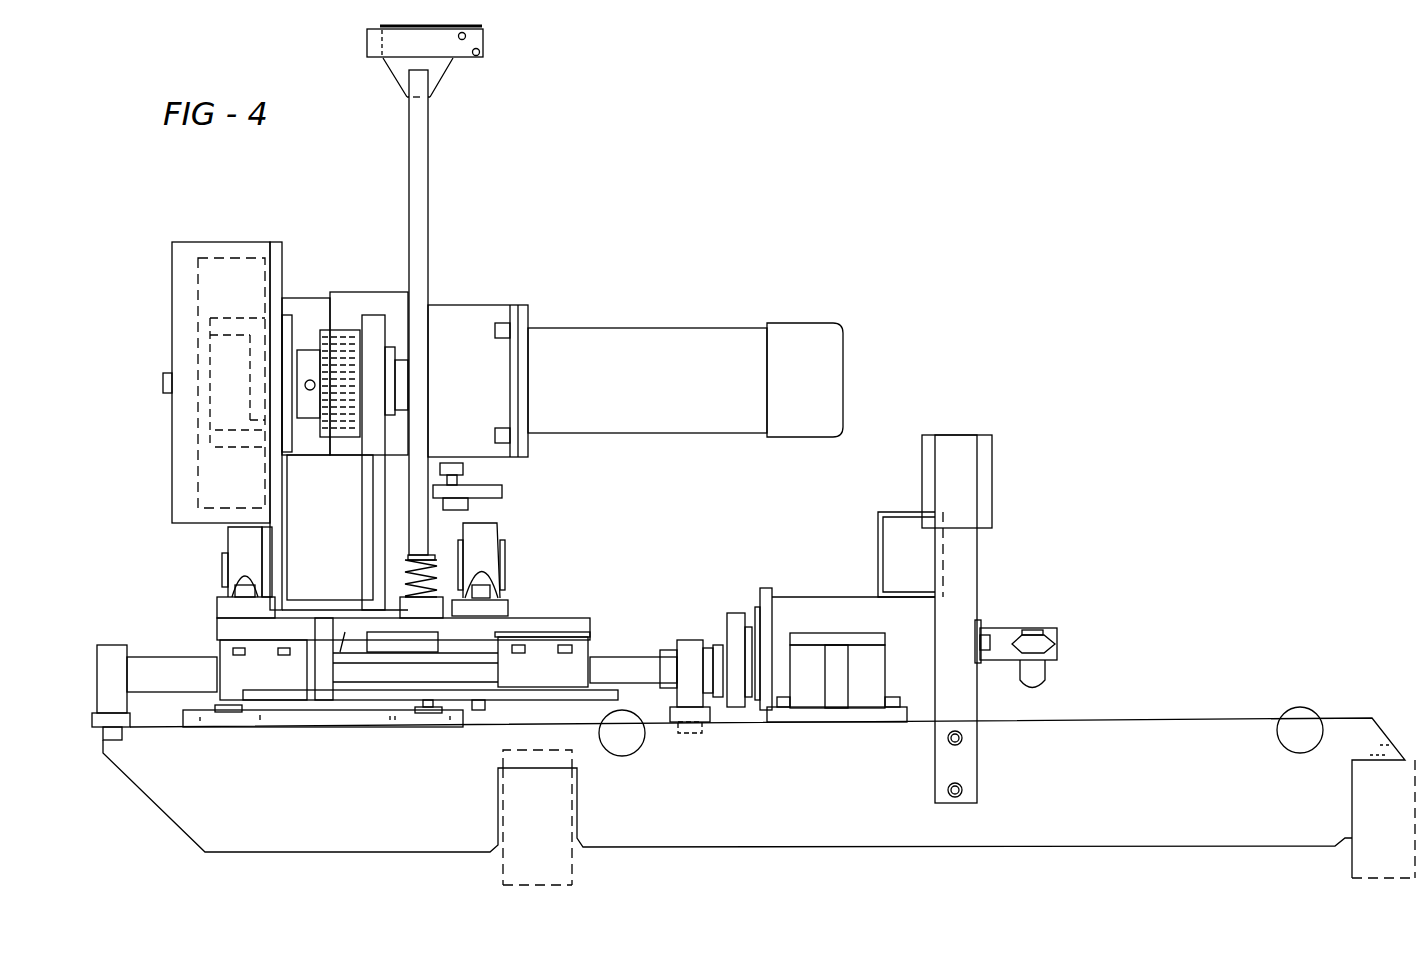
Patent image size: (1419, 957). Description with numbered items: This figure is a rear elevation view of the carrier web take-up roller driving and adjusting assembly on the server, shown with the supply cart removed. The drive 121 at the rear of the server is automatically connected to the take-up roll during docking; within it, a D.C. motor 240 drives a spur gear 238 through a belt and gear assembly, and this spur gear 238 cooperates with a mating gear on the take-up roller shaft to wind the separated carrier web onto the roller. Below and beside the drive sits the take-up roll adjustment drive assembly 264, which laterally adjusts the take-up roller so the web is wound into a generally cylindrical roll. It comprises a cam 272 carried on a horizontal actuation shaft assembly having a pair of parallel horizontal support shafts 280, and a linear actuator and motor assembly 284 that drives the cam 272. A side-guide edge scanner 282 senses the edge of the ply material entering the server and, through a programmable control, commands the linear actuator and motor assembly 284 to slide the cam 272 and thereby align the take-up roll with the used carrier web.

The drive 121 is at (228, 372).
The spur gear 238 is at (345, 445).
The D.C. motor 240 is at (668, 340).
The take-up roll adjustment drive assembly 264 is at (512, 563).
The cam 272 is at (490, 705).
The horizontal support shafts 280 is at (628, 668).
The side-guide edge scanner 282 is at (1003, 459).
The linear actuator and motor assembly 284 is at (724, 610).